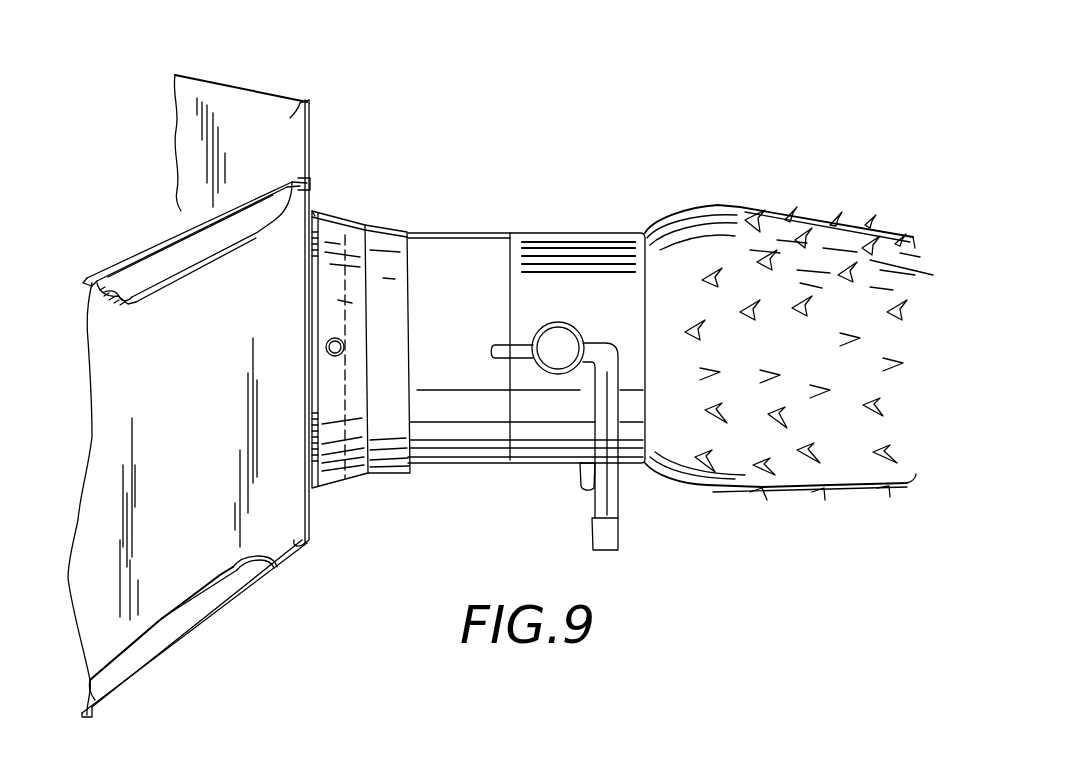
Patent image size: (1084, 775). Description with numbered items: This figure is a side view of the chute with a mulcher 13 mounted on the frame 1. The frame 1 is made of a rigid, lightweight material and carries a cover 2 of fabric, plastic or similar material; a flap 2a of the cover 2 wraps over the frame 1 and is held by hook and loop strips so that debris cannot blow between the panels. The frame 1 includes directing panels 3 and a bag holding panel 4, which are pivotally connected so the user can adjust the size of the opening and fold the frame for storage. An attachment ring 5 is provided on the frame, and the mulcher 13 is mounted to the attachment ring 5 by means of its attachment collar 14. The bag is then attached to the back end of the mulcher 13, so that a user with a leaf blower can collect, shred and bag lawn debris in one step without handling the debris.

The frame 1 is at (310, 105).
The cover 2 is at (252, 145).
The flap 2a is at (170, 267).
The directing panels 3 is at (167, 243).
The bag holding panel 4 is at (318, 152).
The attachment ring 5 is at (318, 240).
The mulcher 13 is at (458, 245).
The attachment collar 14 is at (390, 223).